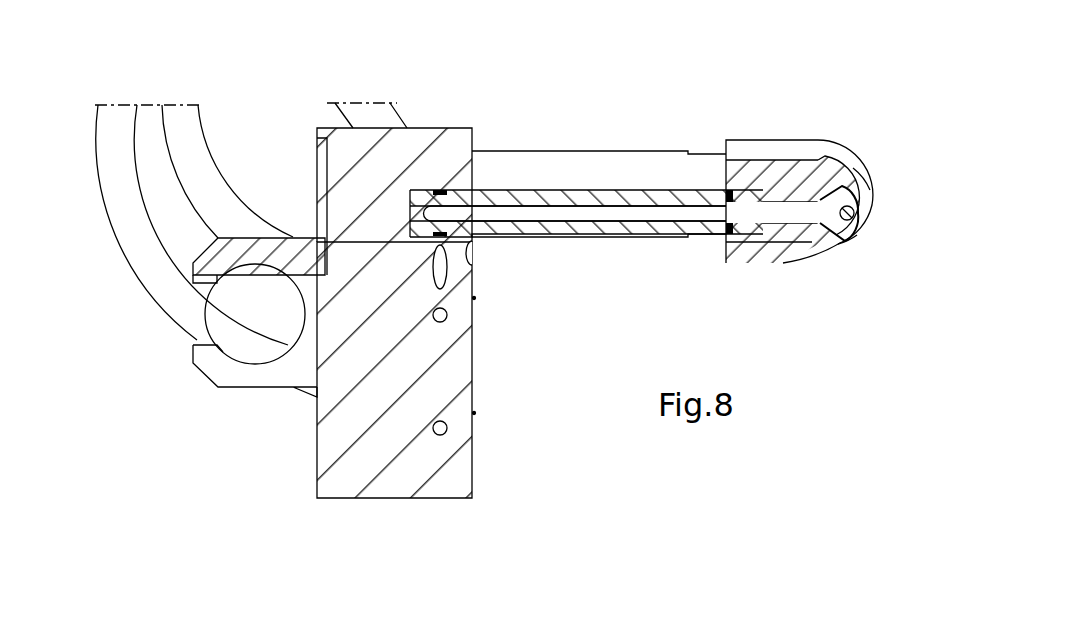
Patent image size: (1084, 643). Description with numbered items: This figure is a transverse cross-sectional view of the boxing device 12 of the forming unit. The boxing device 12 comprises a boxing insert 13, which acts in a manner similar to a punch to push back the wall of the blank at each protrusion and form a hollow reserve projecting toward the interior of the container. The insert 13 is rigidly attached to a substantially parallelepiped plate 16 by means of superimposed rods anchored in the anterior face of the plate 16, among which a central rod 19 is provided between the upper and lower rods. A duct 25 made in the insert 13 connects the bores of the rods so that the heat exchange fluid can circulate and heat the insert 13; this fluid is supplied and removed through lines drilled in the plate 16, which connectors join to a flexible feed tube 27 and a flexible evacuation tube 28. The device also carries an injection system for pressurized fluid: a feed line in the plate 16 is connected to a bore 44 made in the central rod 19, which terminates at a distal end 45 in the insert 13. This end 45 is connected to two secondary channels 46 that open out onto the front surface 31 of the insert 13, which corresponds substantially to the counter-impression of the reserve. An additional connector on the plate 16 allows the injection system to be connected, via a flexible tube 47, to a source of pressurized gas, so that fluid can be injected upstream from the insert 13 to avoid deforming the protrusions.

The boxing device 12 is at (258, 432).
The boxing insert 13 is at (778, 147).
The plate 16 is at (392, 498).
The central rod 19 is at (572, 185).
The duct 25 is at (858, 212).
The flexible feed tube 27 is at (140, 248).
The flexible evacuation tube 28 is at (370, 112).
The front surface 31 is at (847, 163).
The bore 44 is at (630, 212).
The distal end 45 is at (812, 222).
The secondary channels 46 is at (868, 177).
The flexible tube 47 is at (213, 190).